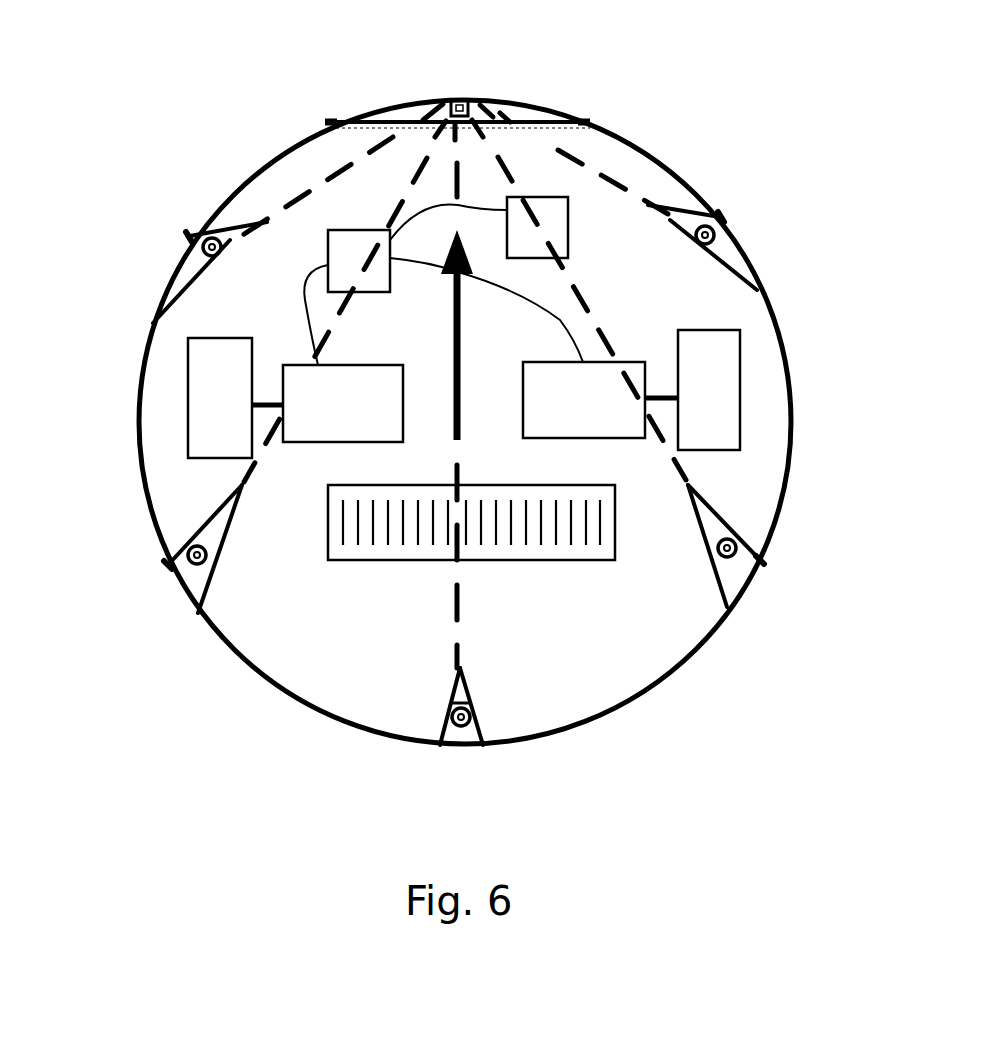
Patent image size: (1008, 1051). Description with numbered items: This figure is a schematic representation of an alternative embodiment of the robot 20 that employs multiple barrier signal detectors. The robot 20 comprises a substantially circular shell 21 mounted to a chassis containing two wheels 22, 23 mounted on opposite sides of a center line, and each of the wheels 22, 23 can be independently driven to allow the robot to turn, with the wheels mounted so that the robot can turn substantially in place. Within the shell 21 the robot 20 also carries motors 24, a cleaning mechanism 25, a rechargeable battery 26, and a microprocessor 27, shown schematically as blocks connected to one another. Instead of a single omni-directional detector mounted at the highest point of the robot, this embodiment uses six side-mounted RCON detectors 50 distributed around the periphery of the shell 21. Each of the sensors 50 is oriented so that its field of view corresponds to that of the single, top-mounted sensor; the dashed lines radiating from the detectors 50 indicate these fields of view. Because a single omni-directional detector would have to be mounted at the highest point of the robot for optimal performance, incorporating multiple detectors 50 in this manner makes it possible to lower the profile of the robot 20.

The robot 20 is at (282, 118).
The shell 21 is at (175, 415).
The wheel 22 is at (722, 405).
The wheel 23 is at (220, 443).
The motors 24 is at (328, 427).
The cleaning mechanism 25 is at (486, 547).
The rechargeable battery 26 is at (360, 238).
The microprocessor 27 is at (547, 222).
The RCON detector 50 is at (466, 102).